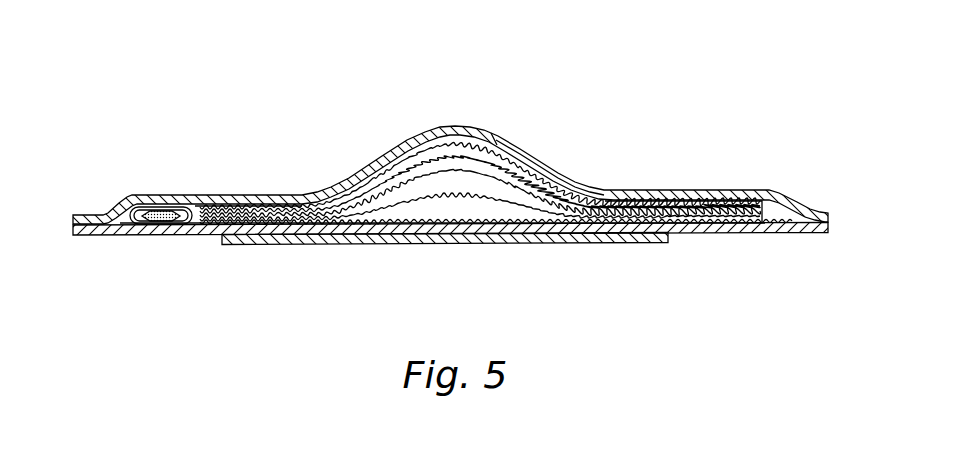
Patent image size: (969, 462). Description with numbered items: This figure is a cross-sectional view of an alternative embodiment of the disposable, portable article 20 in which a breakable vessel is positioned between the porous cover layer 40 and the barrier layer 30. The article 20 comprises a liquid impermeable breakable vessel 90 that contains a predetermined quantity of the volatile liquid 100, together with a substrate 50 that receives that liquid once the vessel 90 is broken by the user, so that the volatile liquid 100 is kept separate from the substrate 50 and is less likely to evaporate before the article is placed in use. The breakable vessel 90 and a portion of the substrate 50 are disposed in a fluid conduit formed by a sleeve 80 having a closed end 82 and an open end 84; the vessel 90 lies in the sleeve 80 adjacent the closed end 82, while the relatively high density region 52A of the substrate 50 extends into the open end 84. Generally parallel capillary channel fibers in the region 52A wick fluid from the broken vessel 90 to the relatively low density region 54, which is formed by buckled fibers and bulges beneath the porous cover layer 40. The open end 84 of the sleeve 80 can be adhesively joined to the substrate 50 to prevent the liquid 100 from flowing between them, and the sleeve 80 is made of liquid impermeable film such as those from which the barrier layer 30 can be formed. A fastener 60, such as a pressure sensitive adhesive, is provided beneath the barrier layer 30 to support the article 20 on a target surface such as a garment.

The disposable, portable article 20 is at (549, 120).
The barrier layer 30 is at (688, 233).
The porous cover layer 40 is at (191, 206).
The substrate 50 is at (587, 193).
The relatively high density region 52A is at (240, 205).
The relatively low density region 54 is at (463, 147).
The fastener 60 is at (508, 244).
The sleeve 80 is at (140, 205).
The closed end 82 is at (125, 212).
The open end 84 is at (302, 236).
The breakable vessel 90 is at (185, 236).
The volatile liquid 100 is at (157, 210).